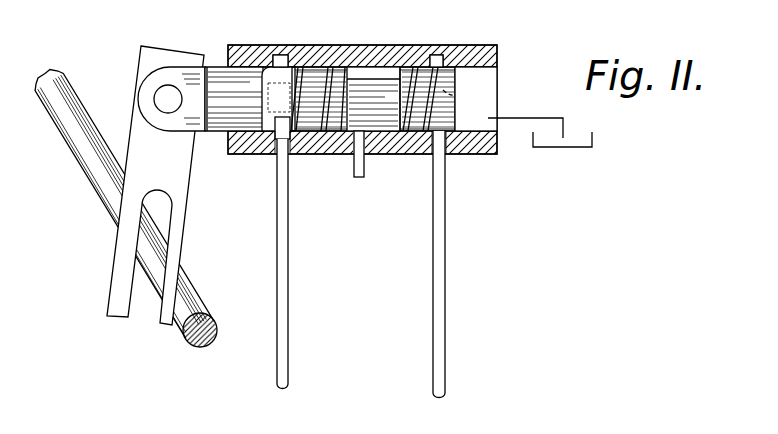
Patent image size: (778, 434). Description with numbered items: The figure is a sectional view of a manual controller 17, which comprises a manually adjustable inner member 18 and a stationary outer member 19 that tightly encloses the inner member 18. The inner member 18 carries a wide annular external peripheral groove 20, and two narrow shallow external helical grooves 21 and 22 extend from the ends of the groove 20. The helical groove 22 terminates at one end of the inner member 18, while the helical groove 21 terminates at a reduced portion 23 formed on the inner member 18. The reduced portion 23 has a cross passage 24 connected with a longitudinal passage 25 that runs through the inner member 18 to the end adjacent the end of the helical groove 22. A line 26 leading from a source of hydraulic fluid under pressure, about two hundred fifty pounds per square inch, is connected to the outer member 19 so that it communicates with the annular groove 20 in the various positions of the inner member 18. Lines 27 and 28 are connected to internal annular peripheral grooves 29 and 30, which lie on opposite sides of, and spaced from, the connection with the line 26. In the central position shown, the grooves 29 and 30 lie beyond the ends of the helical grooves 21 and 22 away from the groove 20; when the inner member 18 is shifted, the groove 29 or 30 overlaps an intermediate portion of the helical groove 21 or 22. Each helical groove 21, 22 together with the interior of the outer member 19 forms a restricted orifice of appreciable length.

The controller 17 is at (311, 46).
The inner member 18 is at (193, 82).
The outer member 19 is at (483, 45).
The annular external peripheral groove 20 is at (383, 78).
The helical groove 21 is at (306, 155).
The helical groove 22 is at (416, 66).
The reduced portion 23 is at (274, 150).
The cross passage 24 is at (272, 56).
The longitudinal passage 25 is at (462, 97).
The line 26 is at (359, 180).
The line 27 is at (282, 243).
The line 28 is at (450, 243).
The internal annular peripheral groove 29 is at (290, 156).
The internal annular peripheral groove 30 is at (448, 143).